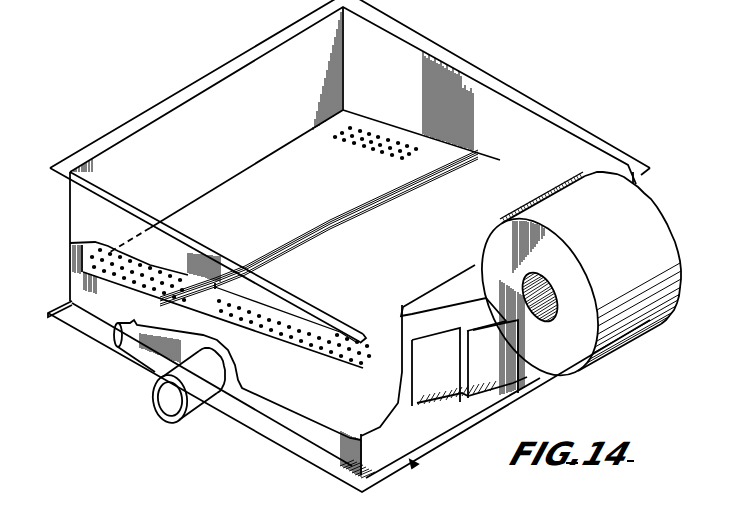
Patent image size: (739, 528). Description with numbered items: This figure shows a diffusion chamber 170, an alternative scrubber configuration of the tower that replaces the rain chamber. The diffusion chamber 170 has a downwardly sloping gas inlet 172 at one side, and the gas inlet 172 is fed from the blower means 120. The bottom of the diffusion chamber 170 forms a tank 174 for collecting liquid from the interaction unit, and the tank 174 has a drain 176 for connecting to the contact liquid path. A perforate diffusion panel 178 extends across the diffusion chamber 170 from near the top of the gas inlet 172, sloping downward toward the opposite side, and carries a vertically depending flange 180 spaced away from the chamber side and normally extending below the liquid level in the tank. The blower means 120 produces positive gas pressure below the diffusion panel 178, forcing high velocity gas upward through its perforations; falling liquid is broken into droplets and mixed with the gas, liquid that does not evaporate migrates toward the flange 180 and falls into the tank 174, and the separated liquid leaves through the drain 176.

The blower means 120 is at (576, 378).
The diffusion chamber 170 is at (412, 468).
The gas inlet 172 is at (450, 380).
The tank 174 is at (117, 343).
The drain 176 is at (201, 418).
The diffusion panel 178 is at (353, 370).
The flange 180 is at (82, 275).